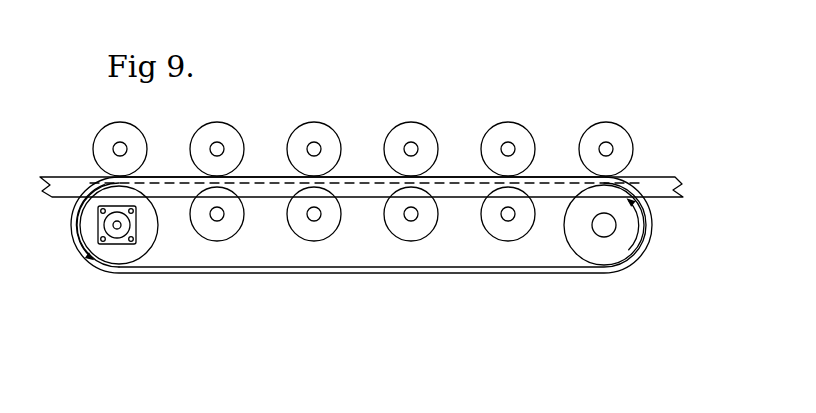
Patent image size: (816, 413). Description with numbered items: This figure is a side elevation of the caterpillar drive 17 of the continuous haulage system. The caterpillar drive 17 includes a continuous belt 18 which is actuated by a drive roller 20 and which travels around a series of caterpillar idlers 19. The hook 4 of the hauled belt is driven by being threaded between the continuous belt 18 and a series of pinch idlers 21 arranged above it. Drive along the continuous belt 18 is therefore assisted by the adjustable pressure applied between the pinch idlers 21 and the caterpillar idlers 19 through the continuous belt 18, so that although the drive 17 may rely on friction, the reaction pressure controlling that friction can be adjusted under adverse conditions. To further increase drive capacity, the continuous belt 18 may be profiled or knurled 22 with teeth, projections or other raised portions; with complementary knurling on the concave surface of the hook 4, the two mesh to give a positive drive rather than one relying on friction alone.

The hook 4 is at (670, 194).
The caterpillar drive 17 is at (255, 309).
The continuous belt 18 is at (380, 273).
The caterpillar idlers 19 is at (507, 242).
The drive roller 20 is at (107, 272).
The pinch idlers 21 is at (522, 125).
The knurling 22 is at (452, 273).